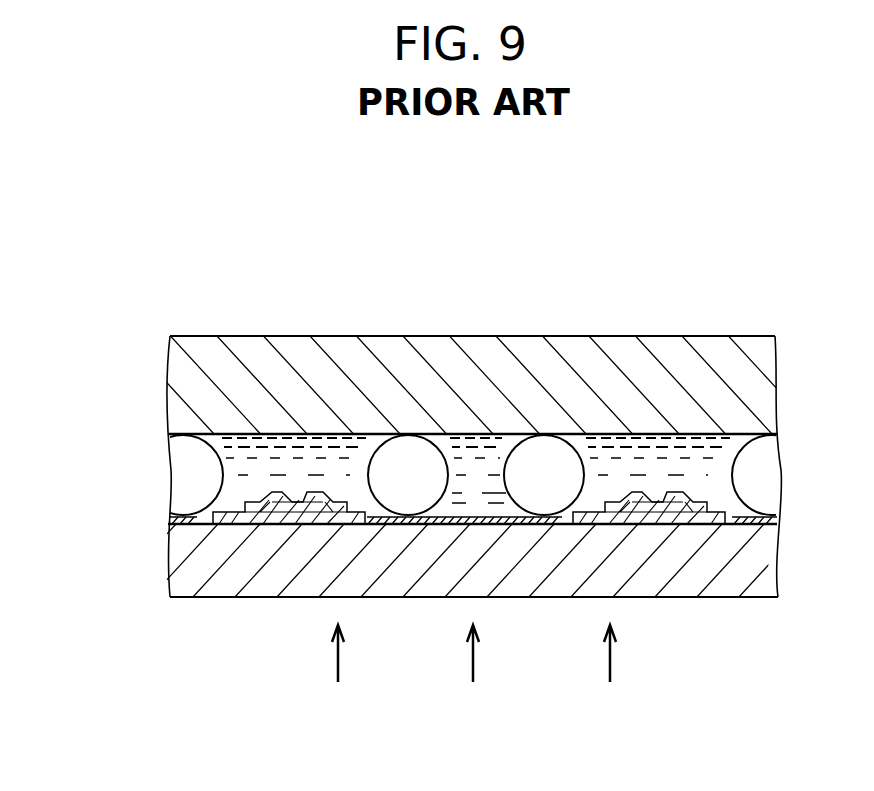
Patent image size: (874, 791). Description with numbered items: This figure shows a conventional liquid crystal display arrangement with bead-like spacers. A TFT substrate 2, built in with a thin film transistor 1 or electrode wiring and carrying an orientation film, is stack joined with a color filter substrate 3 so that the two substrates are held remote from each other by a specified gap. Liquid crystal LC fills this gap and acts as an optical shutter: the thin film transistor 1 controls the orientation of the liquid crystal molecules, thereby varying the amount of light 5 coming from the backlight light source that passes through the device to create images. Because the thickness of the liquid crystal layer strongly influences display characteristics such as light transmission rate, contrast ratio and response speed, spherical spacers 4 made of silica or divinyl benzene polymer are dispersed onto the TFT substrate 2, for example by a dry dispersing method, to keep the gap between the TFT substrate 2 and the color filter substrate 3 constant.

The thin film transistor 1 is at (703, 490).
The TFT substrate 2 is at (693, 573).
The color filter substrate 3 is at (698, 372).
The spacer 4 is at (408, 473).
The light 5 is at (337, 661).
The liquid crystal LC is at (237, 488).